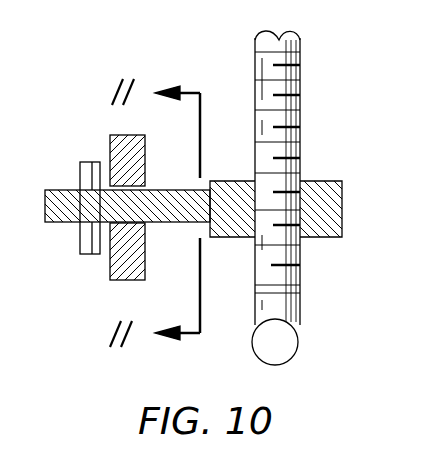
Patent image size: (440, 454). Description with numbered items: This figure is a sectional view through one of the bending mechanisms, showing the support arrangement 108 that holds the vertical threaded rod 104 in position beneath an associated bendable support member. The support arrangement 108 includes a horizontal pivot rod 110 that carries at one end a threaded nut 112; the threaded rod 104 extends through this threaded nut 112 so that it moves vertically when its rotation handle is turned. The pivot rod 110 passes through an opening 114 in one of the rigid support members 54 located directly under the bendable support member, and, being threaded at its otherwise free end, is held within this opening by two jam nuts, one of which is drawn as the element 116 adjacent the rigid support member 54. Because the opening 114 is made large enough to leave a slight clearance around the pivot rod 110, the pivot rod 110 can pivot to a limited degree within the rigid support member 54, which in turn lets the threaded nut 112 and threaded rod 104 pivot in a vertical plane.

The rigid support member 54 is at (113, 281).
The threaded rod 104 is at (300, 293).
The support arrangement 108 is at (95, 99).
The pivot rod 110 is at (194, 223).
The threaded nut 112 is at (321, 186).
The opening 114 is at (120, 200).
The retaining collar 116 is at (92, 162).